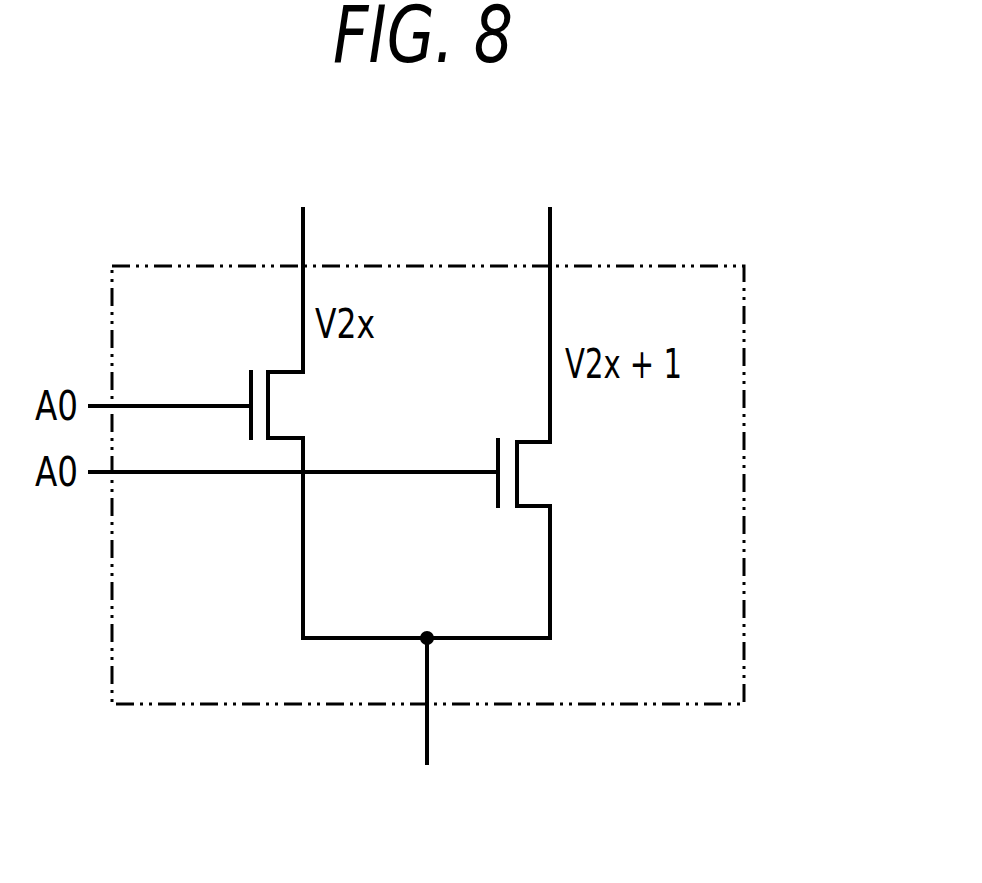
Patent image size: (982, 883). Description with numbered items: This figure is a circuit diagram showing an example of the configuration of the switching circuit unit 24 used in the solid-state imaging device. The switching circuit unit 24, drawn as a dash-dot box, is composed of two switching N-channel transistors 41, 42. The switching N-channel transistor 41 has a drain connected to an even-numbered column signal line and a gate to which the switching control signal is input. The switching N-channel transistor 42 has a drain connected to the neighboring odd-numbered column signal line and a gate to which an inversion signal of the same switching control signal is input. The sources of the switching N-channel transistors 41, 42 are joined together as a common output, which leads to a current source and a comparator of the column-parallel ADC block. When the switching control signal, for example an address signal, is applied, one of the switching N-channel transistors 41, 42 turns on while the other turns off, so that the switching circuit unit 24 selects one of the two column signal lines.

The switching circuit unit 24 is at (748, 278).
The switching N-channel transistor 41 is at (283, 400).
The switching N-channel transistor 42 is at (543, 467).